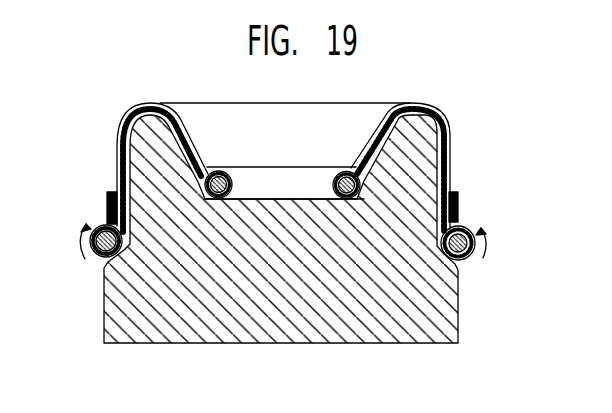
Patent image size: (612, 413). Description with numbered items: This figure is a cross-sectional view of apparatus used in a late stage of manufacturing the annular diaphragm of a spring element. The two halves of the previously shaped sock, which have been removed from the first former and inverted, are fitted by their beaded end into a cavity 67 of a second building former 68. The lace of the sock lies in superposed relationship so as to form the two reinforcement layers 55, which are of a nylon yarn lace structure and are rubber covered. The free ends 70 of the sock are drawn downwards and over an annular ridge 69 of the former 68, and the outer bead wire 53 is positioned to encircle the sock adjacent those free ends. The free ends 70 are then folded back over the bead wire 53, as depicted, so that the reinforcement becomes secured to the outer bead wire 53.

The outer bead wire 53 is at (473, 262).
The reinforcement layers 55 is at (118, 126).
The cavity 67 is at (281, 199).
The second building former 68 is at (438, 328).
The annular ridge 69 is at (415, 133).
The free ends of the sock 70 is at (459, 195).